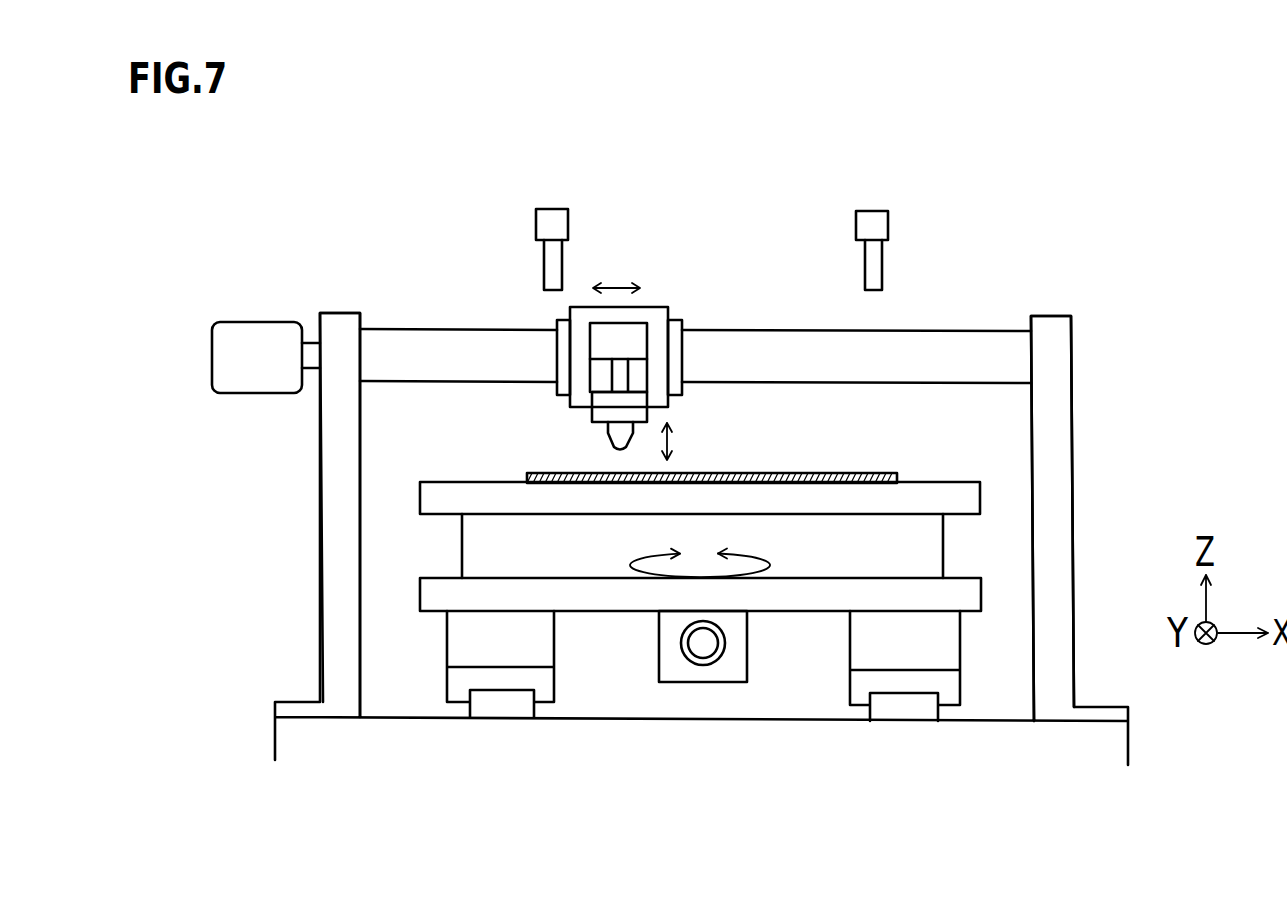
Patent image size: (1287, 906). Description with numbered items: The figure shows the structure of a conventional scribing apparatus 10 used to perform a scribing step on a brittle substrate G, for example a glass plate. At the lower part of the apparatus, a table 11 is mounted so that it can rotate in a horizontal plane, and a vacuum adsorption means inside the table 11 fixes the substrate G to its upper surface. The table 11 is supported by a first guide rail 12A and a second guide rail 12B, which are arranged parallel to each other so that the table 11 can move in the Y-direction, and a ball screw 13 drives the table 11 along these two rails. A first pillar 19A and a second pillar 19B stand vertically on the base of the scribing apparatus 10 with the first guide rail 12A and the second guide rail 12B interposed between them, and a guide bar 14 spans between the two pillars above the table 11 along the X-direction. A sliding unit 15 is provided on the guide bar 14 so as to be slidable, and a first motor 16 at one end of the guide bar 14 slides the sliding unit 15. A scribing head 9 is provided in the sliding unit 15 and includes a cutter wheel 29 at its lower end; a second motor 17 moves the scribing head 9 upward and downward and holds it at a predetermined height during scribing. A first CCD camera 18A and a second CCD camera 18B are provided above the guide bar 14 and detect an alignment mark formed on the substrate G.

The scribing apparatus 10 is at (182, 158).
The table 11 is at (433, 482).
The first guide rail 12A is at (508, 707).
The second guide rail 12B is at (905, 710).
The ball screw 13 is at (703, 650).
The guide bar 14 is at (980, 341).
The sliding unit 15 is at (658, 307).
The first motor 16 is at (260, 328).
The second motor 17 is at (637, 338).
The first CCD camera 18A is at (536, 213).
The second CCD camera 18B is at (888, 214).
The first pillar 19A is at (342, 555).
The second pillar 19B is at (1062, 443).
The cutter wheel 29 is at (608, 447).
The scribing head 9 is at (582, 423).
The substrate G is at (862, 474).